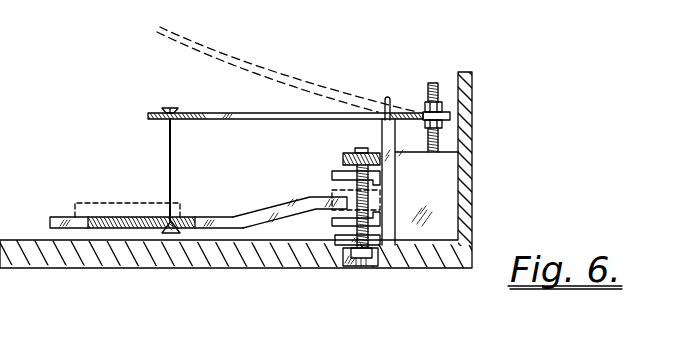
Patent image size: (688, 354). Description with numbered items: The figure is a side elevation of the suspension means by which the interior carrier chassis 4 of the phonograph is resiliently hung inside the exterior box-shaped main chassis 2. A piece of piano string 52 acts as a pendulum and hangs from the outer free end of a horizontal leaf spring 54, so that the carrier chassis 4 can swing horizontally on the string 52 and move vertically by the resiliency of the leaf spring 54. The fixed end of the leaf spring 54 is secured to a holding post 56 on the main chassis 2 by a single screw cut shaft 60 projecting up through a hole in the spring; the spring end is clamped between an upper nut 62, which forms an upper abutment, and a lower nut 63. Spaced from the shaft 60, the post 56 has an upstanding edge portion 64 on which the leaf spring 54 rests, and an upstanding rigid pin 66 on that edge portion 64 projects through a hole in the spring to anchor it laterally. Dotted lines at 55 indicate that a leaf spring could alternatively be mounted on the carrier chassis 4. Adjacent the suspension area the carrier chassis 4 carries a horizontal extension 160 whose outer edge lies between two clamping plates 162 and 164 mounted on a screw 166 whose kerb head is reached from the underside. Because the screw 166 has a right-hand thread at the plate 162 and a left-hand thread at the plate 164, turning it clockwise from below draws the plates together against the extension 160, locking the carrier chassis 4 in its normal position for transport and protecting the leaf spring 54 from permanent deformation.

The main chassis 2 is at (461, 268).
The carrier chassis 4 is at (62, 218).
The piano string 52 is at (168, 170).
The leaf spring 54 is at (212, 113).
The leaf spring on carrier chassis 55 is at (114, 203).
The holding post 56 is at (433, 201).
The screw cut shaft 60 is at (432, 86).
The nut 62 is at (425, 108).
The nut 63 is at (440, 125).
The upstanding edge portion 64 is at (383, 138).
The rigid pin 66 is at (386, 100).
The horizontal extension 160 is at (268, 215).
The clamping plate 162 is at (338, 172).
The clamping plate 164 is at (335, 222).
The screw 166 is at (360, 258).